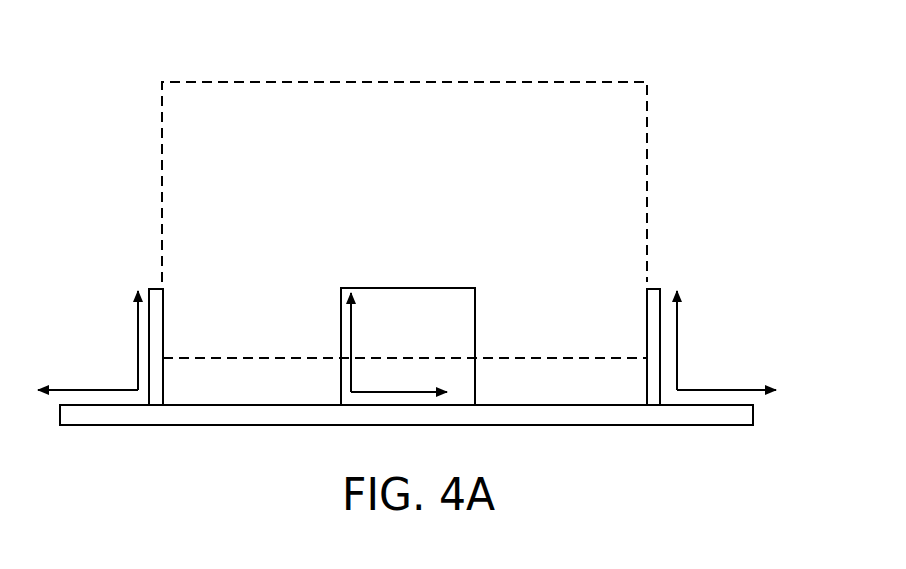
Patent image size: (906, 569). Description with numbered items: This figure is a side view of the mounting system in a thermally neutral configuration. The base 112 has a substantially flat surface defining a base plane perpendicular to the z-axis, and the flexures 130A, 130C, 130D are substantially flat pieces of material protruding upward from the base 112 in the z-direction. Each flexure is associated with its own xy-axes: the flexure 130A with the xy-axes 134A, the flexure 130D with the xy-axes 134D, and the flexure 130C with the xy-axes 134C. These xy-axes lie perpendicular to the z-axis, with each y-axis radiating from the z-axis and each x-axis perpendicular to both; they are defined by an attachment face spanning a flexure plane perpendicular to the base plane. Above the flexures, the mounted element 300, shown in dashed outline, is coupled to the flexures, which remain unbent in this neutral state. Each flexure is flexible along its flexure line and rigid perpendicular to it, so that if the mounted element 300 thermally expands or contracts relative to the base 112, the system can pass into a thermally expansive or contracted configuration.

The base 112 is at (97, 415).
The mounted element 300 is at (207, 82).
The flexure 130A is at (158, 292).
The flexure 130C is at (652, 293).
The flexure 130D is at (460, 368).
The xy-axes 134A is at (138, 347).
The xy-axes 134D is at (407, 398).
The xy-axes 134C is at (678, 350).